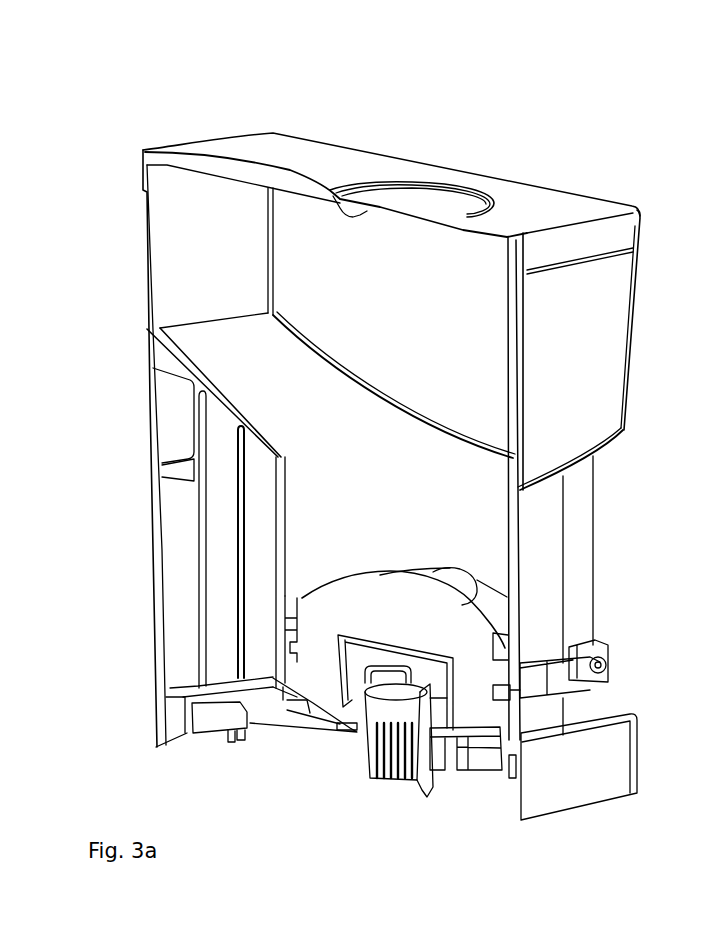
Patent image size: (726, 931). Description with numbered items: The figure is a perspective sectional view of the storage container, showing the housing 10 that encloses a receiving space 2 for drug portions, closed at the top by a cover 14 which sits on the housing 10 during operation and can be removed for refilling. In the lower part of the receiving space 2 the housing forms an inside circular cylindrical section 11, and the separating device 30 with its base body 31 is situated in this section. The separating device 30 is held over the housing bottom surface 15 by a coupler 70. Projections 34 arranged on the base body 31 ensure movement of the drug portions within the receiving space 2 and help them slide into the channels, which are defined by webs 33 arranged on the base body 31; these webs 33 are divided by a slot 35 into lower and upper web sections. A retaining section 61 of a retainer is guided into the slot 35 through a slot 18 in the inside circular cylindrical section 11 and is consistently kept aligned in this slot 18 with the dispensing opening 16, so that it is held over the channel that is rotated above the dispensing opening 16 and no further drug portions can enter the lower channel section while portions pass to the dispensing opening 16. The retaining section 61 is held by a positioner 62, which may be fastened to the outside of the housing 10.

The receiving space 2 is at (313, 275).
The cover 14 is at (420, 172).
The housing 10 is at (573, 332).
The inside circular cylindrical section 11 is at (545, 560).
The separating device 30 is at (348, 549).
The base body 31 is at (330, 600).
The webs 33 is at (287, 627).
The projections 34 is at (460, 568).
The slot 35 is at (288, 686).
The housing bottom surface 15 is at (315, 707).
The coupler 70 is at (368, 780).
The dispensing opening 16 is at (493, 767).
The slot 18 is at (578, 672).
The retaining section 61 is at (622, 714).
The positioner 62 is at (607, 646).